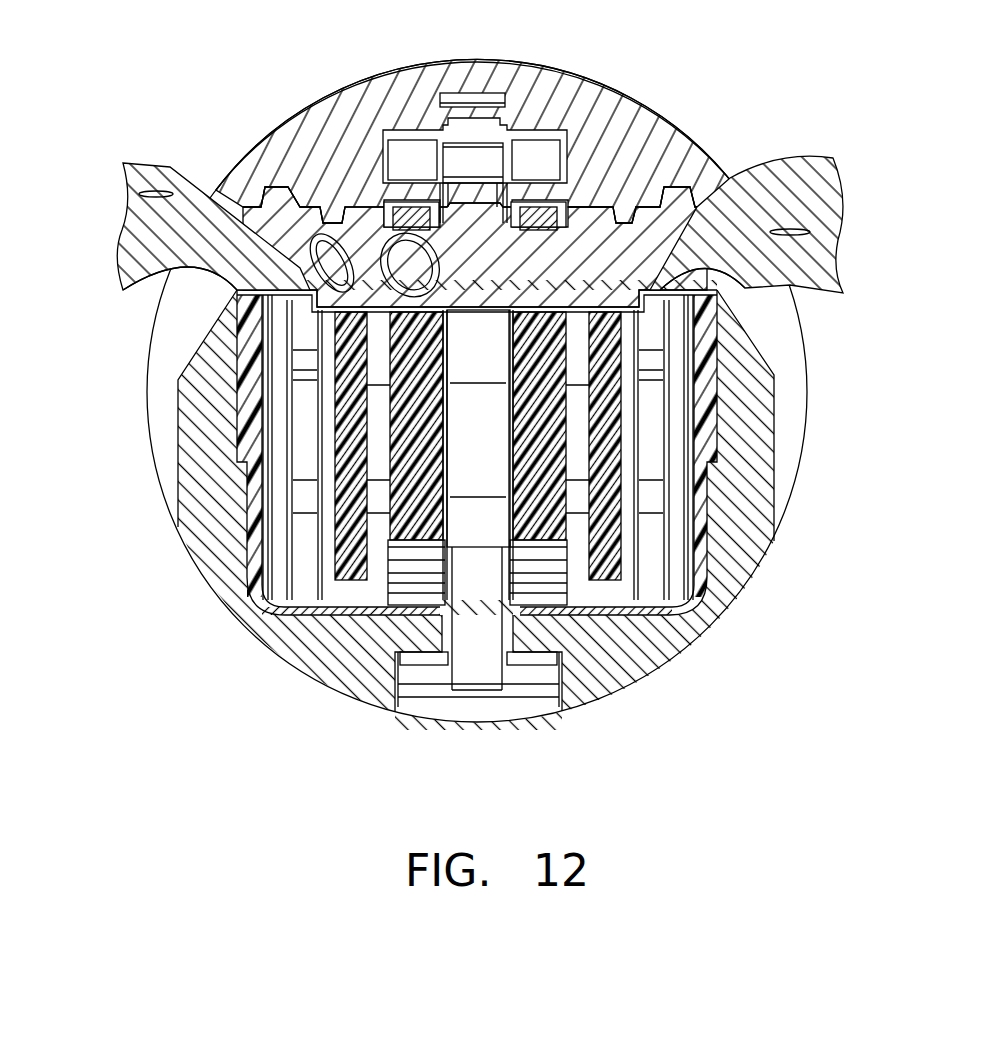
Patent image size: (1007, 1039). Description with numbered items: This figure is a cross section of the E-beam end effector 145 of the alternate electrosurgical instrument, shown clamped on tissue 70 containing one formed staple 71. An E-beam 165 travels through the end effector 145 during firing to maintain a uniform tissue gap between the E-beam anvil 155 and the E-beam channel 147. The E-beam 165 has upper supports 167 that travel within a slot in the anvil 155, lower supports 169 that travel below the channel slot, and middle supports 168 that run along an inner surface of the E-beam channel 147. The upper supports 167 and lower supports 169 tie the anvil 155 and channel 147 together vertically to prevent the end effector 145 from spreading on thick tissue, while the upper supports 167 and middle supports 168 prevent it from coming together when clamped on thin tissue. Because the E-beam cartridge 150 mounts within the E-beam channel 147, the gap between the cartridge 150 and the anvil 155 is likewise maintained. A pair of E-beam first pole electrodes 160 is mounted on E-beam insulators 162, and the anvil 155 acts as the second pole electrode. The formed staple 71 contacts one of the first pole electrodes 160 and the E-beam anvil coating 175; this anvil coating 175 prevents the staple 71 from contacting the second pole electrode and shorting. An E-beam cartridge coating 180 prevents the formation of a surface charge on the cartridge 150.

The tissue 70 is at (797, 155).
The formed staple 71 is at (318, 245).
The E-beam end effector 145 is at (318, 84).
The E-beam channel 147 is at (196, 585).
The E-beam cartridge 150 is at (707, 387).
The E-beam anvil 155 is at (640, 123).
The E-beam first pole electrode 160 is at (410, 200).
The E-beam insulator 162 is at (410, 205).
The E-beam 165 is at (482, 573).
The E-beam upper support 167 is at (517, 147).
The E-beam middle support 168 is at (415, 590).
The E-beam lower support 169 is at (425, 660).
The E-beam anvil coating 175 is at (697, 135).
The E-beam cartridge coating 180 is at (195, 268).